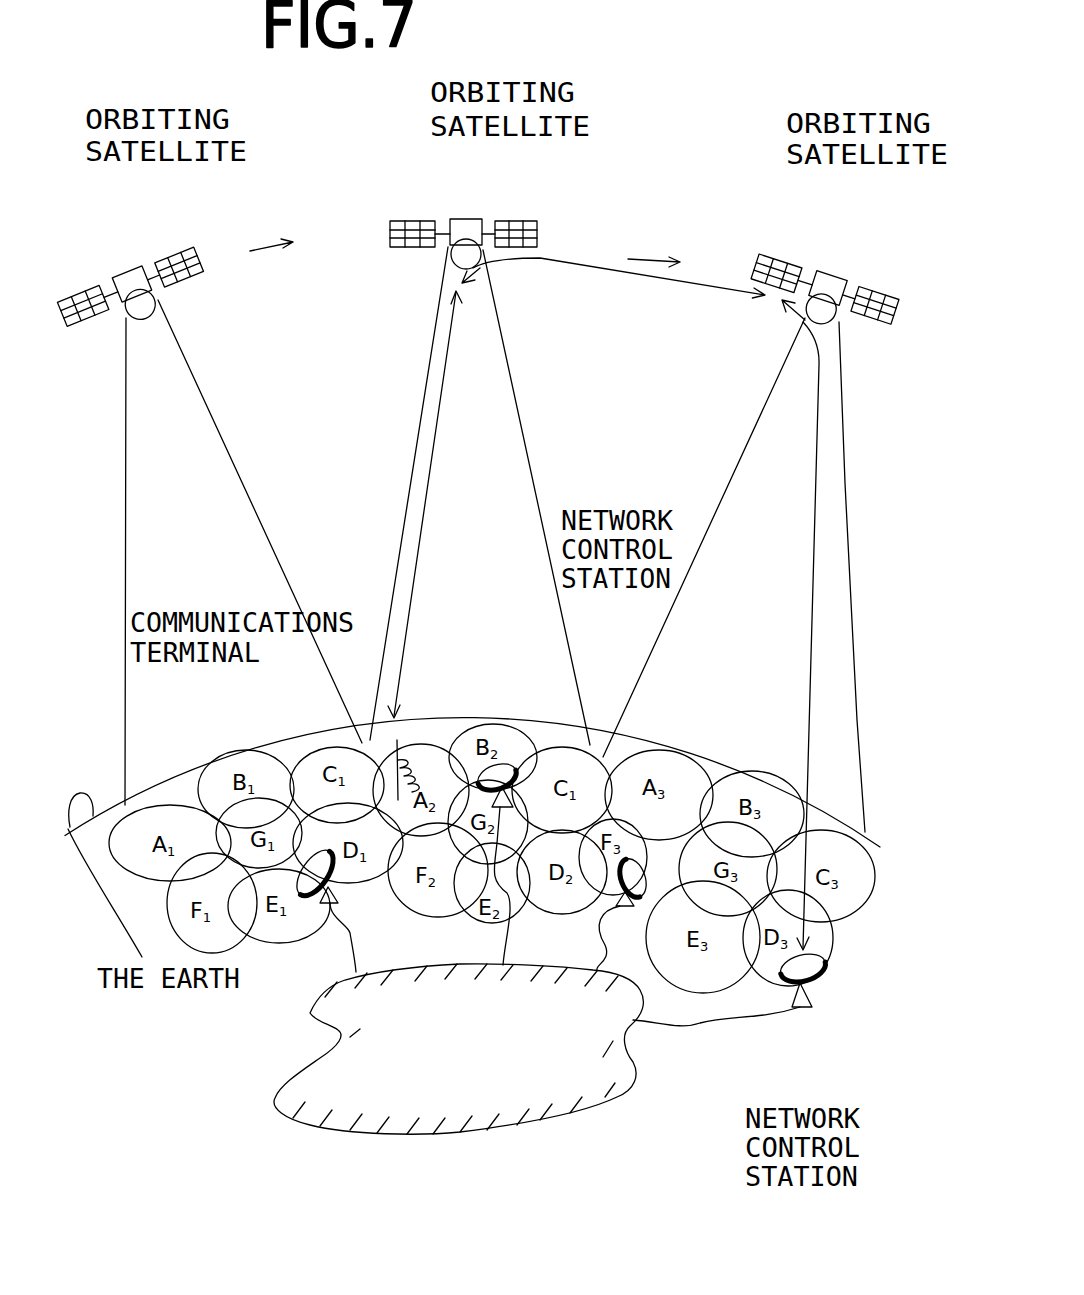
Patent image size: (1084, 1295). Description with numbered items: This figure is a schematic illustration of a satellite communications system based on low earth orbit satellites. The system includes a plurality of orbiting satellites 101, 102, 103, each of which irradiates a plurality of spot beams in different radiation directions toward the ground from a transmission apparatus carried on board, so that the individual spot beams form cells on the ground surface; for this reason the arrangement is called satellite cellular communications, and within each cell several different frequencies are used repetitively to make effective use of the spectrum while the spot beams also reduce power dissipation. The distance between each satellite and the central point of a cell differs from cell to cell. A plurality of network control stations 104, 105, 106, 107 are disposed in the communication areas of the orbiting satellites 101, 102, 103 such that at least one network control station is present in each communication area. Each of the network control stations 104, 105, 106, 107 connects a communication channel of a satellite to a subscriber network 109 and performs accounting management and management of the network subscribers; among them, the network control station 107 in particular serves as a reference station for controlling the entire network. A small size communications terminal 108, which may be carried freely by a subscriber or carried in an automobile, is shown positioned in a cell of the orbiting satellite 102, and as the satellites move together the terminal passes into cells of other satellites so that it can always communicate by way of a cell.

The orbiting satellite 101 is at (143, 268).
The orbiting satellite 102 is at (482, 220).
The orbiting satellite 103 is at (833, 275).
The network control station 104 is at (338, 900).
The network control station 105 is at (802, 1007).
The network control station 106 is at (627, 907).
The network control station 107 is at (514, 770).
The communications terminal 108 is at (395, 742).
The subscriber network 109 is at (485, 1132).